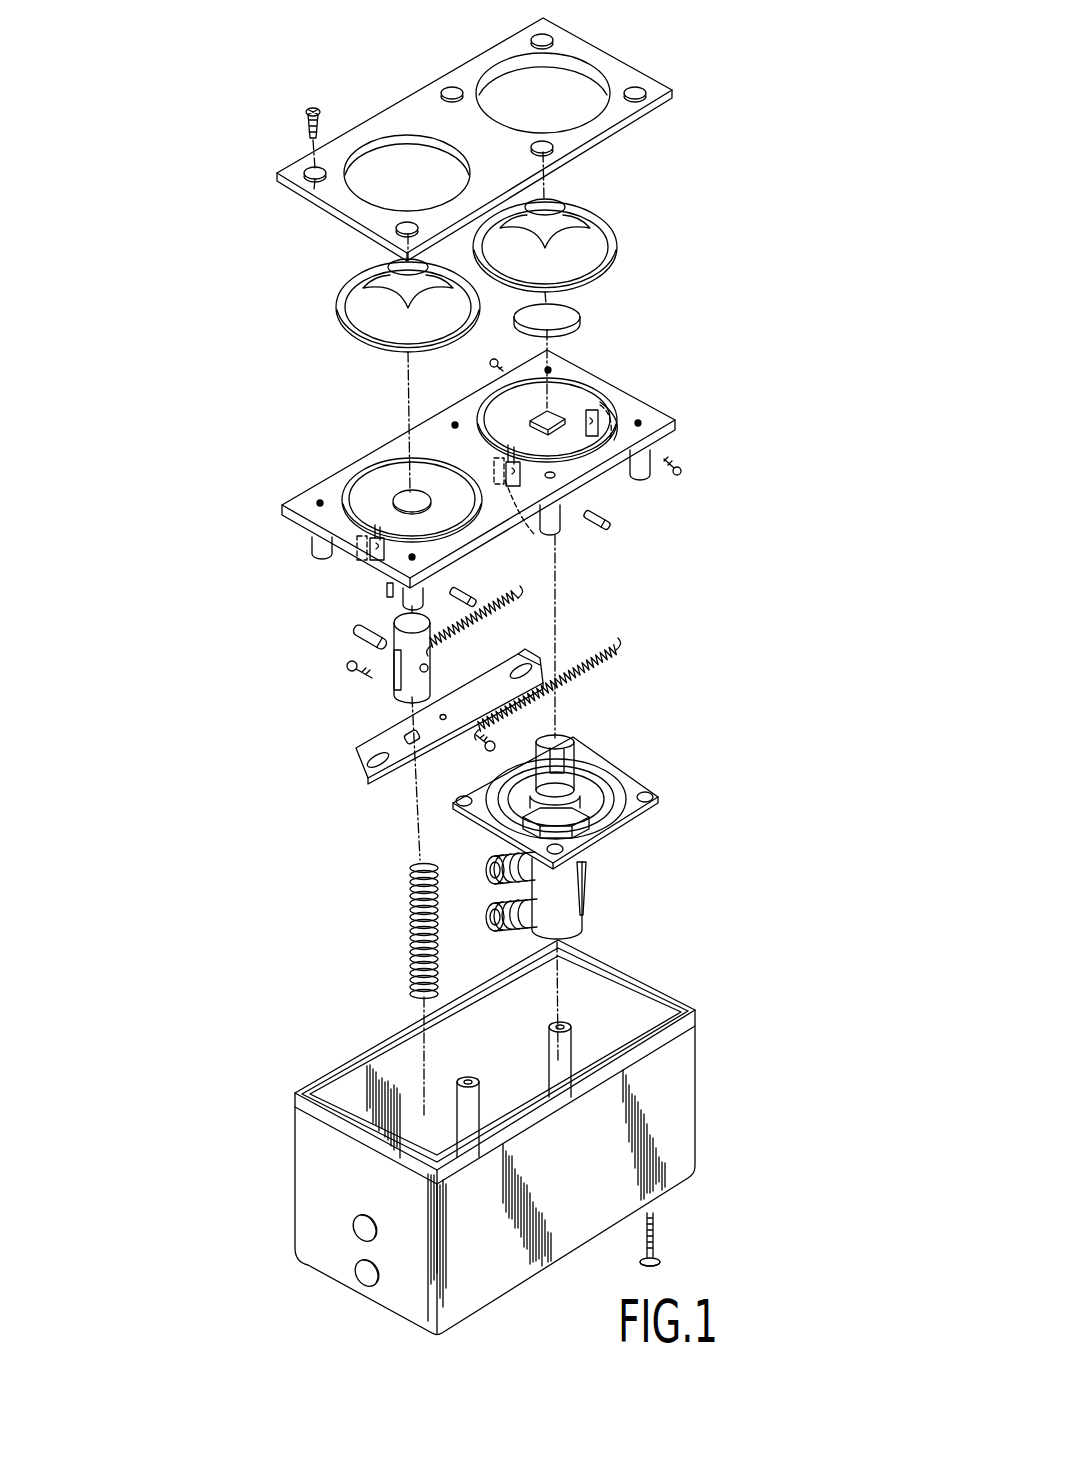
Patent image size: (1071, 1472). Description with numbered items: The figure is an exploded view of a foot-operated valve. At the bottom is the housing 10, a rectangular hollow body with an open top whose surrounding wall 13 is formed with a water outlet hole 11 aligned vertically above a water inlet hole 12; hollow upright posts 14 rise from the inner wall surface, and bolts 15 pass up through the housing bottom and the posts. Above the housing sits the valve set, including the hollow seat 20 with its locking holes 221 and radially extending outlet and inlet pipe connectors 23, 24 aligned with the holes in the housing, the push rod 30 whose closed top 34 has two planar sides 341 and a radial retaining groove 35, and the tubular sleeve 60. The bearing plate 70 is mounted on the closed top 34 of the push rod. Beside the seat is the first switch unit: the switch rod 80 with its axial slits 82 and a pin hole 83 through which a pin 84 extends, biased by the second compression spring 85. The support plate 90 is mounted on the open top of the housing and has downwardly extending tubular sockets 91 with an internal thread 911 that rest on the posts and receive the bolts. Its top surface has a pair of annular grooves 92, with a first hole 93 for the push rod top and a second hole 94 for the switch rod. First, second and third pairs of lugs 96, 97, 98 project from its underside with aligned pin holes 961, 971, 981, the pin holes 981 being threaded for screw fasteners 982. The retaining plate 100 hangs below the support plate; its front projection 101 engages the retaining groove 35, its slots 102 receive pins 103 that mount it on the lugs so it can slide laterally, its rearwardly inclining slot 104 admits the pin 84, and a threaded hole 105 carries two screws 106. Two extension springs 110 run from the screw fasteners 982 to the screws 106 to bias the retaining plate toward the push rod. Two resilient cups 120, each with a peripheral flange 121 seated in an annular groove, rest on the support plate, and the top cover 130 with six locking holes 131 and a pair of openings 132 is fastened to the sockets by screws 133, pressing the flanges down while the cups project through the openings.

The housing 10 is at (500, 1137).
The water outlet hole 11 is at (353, 1227).
The water inlet hole 12 is at (357, 1272).
The surrounding wall 13 is at (683, 1100).
The upright posts 14 is at (471, 1078).
The bolts 15 is at (656, 1236).
The hollow seat 20 is at (513, 898).
The outlet pipe connector 23 is at (490, 874).
The inlet pipe connector 24 is at (490, 921).
The push rod 30 is at (585, 786).
The closed top 34 is at (600, 755).
The planar sides 341 is at (567, 752).
The radial retaining groove 35 is at (593, 822).
The tubular sleeve 60 is at (590, 836).
The bearing plate 70 is at (644, 337).
The switch rod 80 is at (360, 671).
The slits 82 is at (397, 703).
The pin hole 83 is at (428, 668).
The pin 84 is at (353, 637).
The second compression spring 85 is at (409, 928).
The support plate 90 is at (489, 484).
The tubular sockets 91 is at (311, 542).
The internal thread 911 is at (317, 502).
The annular grooves 92 is at (352, 497).
The first hole 93 is at (537, 417).
The second hole 94 is at (400, 495).
The first pair of lugs 96 is at (380, 570).
The pin holes 961 is at (390, 588).
The second pair of lugs 97 is at (528, 490).
The pin holes 971 is at (567, 500).
The third pair of lugs 98 is at (612, 437).
The pin holes 981 is at (613, 440).
The screw fasteners 982 is at (493, 361).
The retaining plate 100 is at (451, 721).
The projection 101 is at (542, 657).
The slots 102 is at (521, 665).
The pins 103 is at (610, 528).
The rearwardly inclining slot 104 is at (412, 743).
The threaded hole 105 is at (443, 720).
The screws 106 is at (348, 670).
The extension springs 110 is at (500, 600).
The resilient cups 120 is at (474, 276).
The peripheral flange 121 is at (345, 328).
The top cover 130 is at (471, 133).
The locking holes 131 is at (537, 35).
The openings 132 is at (502, 85).
The screws 133 is at (315, 107).
The locking holes 221 is at (423, 807).